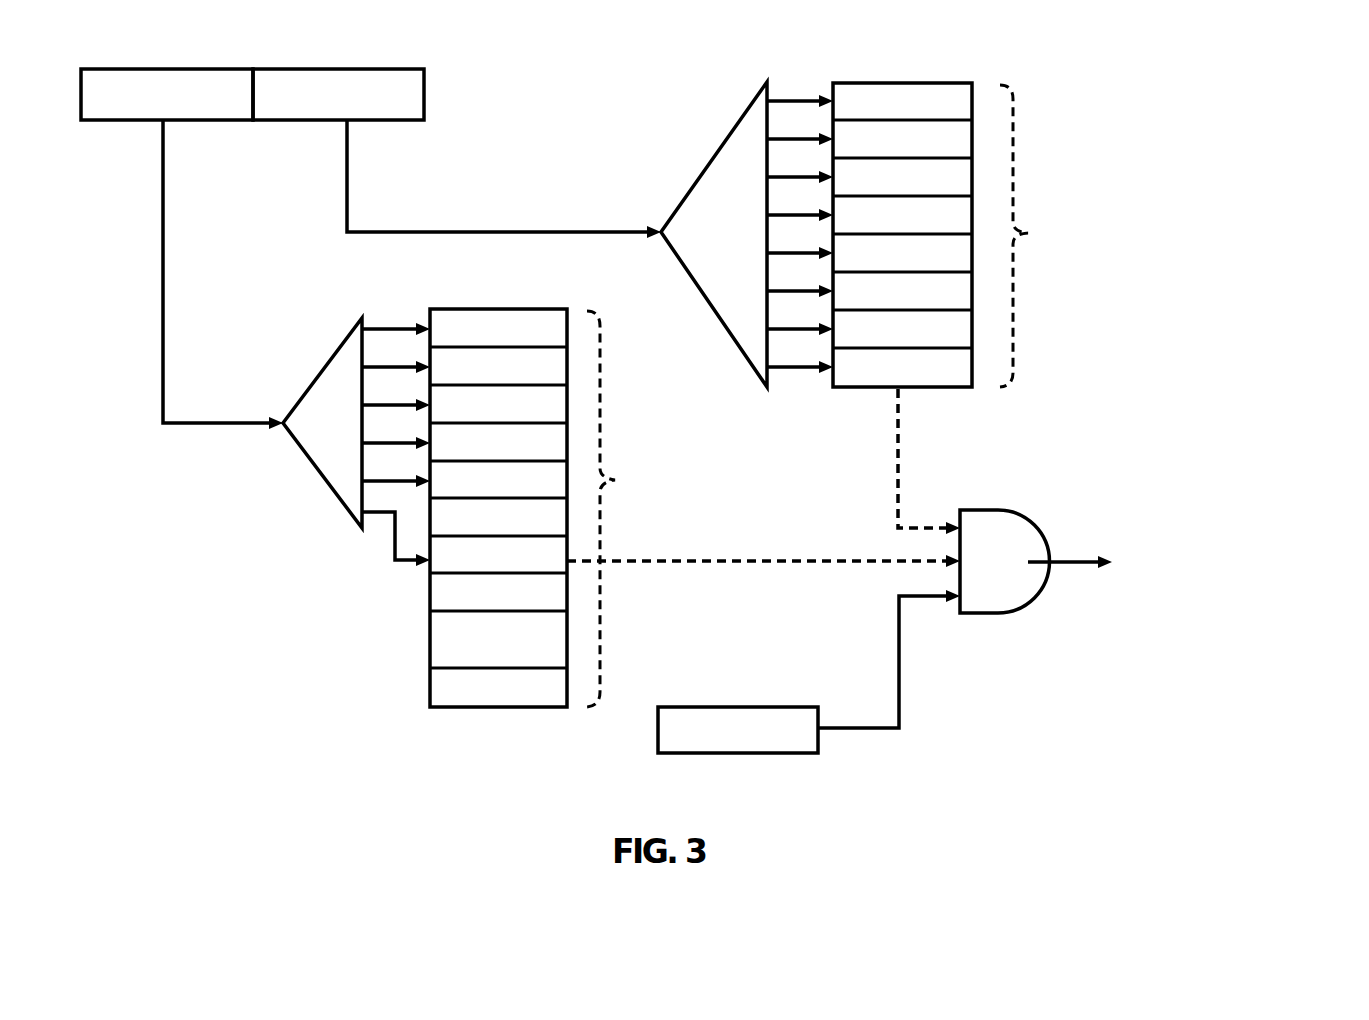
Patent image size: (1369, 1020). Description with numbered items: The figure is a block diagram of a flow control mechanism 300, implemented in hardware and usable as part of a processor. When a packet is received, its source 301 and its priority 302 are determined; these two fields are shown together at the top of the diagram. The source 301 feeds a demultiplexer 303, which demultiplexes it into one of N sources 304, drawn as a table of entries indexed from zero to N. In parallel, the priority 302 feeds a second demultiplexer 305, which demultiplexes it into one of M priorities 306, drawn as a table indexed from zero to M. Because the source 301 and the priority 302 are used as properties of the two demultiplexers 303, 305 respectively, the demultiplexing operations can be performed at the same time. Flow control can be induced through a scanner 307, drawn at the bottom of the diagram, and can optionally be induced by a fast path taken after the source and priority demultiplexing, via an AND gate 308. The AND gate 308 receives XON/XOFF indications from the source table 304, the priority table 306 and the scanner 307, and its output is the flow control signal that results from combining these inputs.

The flow control mechanism 300 is at (651, 62).
The source 301 is at (155, 70).
The priority 302 is at (325, 70).
The demultiplexer 303 is at (343, 435).
The N sources 304 is at (500, 308).
The M priorities 305 is at (730, 245).
The priority XON/XOFF table 306 is at (900, 82).
The scanner 307 is at (730, 707).
The AND gate 308 is at (1008, 569).